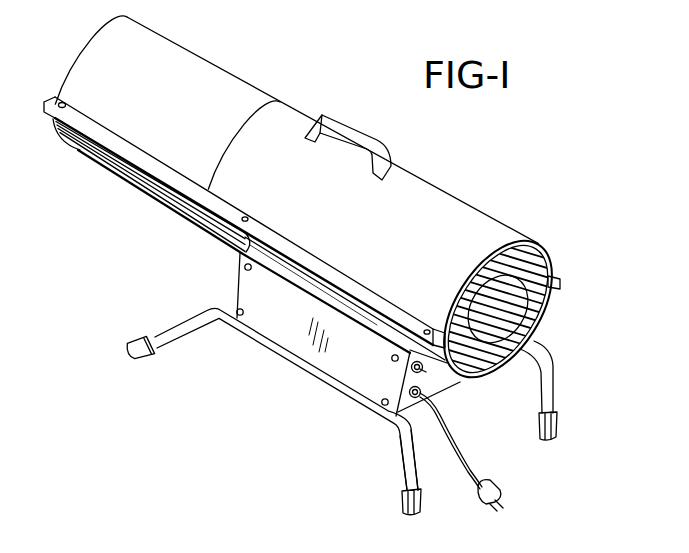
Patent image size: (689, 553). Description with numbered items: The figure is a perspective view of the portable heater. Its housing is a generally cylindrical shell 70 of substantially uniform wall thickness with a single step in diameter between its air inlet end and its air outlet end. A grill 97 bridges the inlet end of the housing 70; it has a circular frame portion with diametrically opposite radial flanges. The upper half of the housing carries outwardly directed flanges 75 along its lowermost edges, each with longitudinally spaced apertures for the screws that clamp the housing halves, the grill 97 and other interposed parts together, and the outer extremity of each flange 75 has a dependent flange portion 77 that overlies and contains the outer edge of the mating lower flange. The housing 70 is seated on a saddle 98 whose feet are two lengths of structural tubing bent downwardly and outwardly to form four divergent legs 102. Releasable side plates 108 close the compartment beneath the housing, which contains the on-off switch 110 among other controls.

The cylindrical shell 70 is at (284, 100).
The flanges 75 is at (124, 152).
The dependent flange portion 77 is at (190, 196).
The grill 97 is at (542, 304).
The saddle 98 is at (292, 365).
The legs 102 is at (408, 447).
The side plates 108 is at (250, 295).
The on-off switch 110 is at (423, 371).